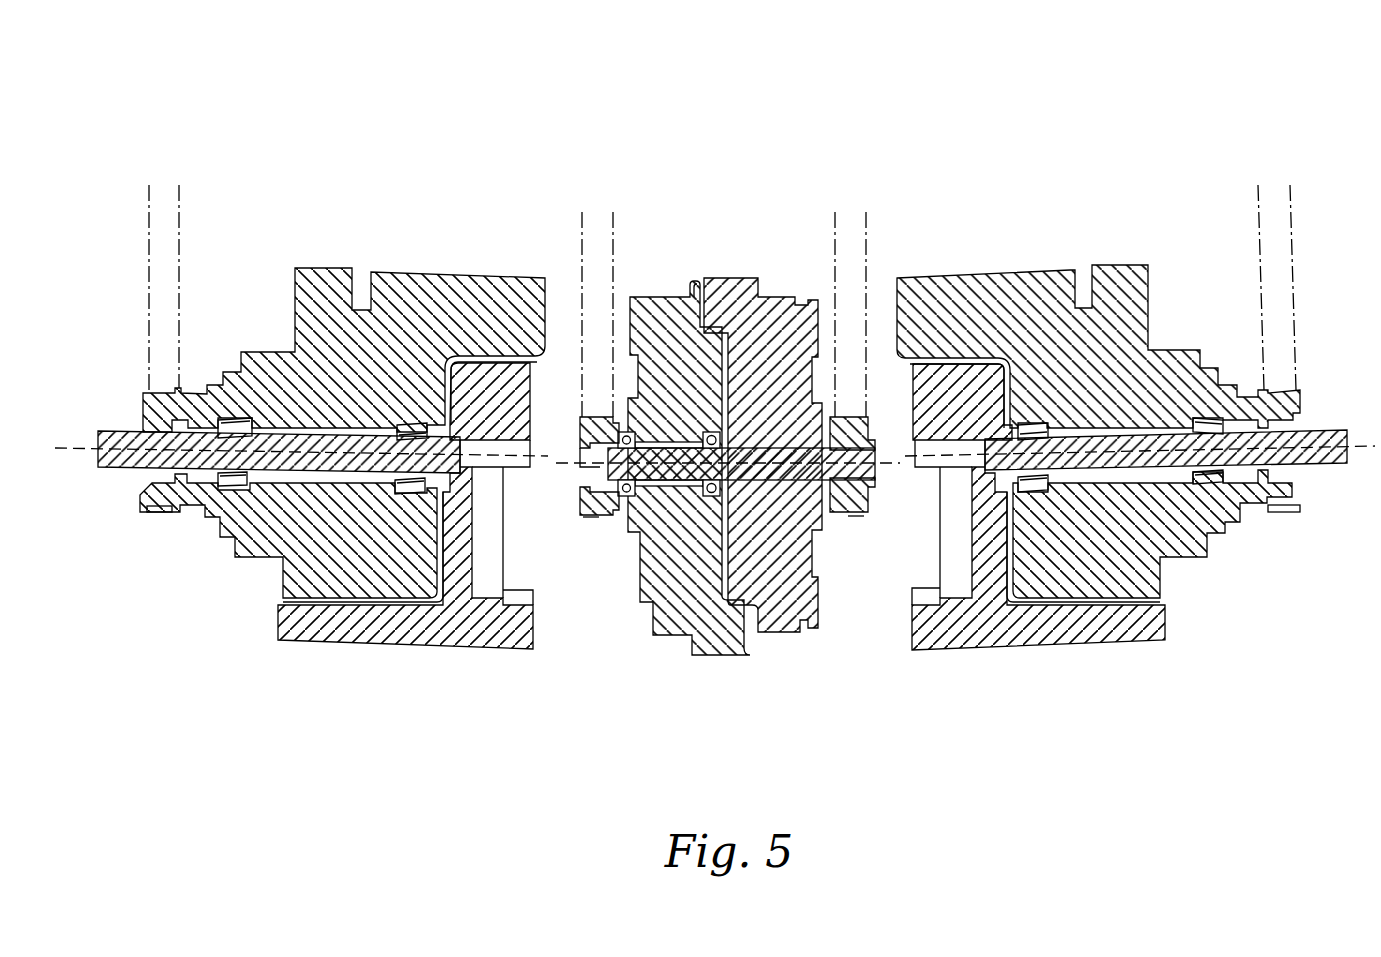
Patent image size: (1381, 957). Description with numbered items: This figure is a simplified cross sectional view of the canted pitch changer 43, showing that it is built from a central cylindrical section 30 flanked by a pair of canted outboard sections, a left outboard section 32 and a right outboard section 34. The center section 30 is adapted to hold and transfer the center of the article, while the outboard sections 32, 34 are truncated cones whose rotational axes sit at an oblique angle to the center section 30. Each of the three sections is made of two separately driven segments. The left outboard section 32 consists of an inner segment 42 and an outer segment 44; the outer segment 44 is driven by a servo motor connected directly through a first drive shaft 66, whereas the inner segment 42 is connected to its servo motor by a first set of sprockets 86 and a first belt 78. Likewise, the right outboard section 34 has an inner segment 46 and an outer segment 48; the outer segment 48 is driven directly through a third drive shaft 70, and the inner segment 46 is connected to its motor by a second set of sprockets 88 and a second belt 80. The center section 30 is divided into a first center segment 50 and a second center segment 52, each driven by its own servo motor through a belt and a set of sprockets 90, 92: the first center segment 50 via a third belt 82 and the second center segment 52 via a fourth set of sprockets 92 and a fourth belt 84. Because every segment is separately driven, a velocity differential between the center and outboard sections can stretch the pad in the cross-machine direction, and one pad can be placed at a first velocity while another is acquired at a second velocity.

The central cylindrical section 30 is at (692, 474).
The left outboard section 32 is at (301, 470).
The right outboard section 34 is at (1132, 474).
The inner segment 42 is at (515, 642).
The canted pitch changer 43 is at (715, 424).
The outer segment 44 is at (398, 293).
The inner segment 46 is at (1133, 630).
The outer segment 48 is at (1006, 292).
The first center segment 50 is at (667, 622).
The second center segment 52 is at (787, 607).
The first drive shaft 66 is at (117, 470).
The third drive shaft 70 is at (1328, 426).
The first belt 78 is at (148, 287).
The second belt 80 is at (1257, 267).
The third belt 82 is at (580, 236).
The fourth belt 84 is at (833, 235).
The first set of sprockets 86 is at (163, 512).
The second set of sprockets 88 is at (1278, 515).
The set of sprockets 90 is at (598, 517).
The fourth set of sprockets 92 is at (850, 517).